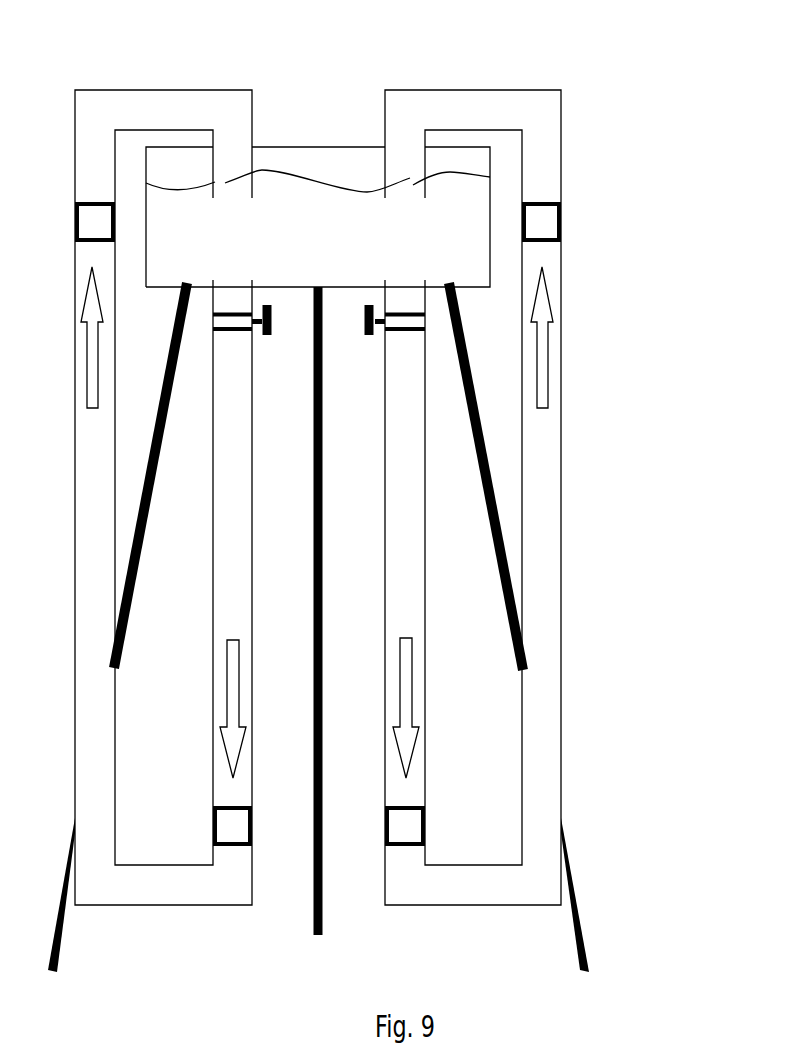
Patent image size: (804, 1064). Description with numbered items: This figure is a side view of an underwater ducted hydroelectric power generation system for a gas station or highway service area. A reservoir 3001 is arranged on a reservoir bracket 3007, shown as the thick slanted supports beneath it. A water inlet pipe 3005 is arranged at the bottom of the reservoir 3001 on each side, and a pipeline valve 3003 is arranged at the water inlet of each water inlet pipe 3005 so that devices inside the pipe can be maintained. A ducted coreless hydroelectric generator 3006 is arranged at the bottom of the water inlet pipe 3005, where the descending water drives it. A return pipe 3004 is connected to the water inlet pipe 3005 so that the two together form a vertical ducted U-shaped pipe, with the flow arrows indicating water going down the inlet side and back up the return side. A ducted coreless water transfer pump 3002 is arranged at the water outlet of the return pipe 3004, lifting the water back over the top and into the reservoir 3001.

The reservoir 3001 is at (358, 150).
The ducted coreless water transfer pump 3002 is at (538, 217).
The pipeline valve 3003 is at (402, 322).
The return pipe 3004 is at (562, 382).
The water inlet pipe 3005 is at (423, 615).
The ducted coreless hydroelectric generator 3006 is at (407, 823).
The reservoir bracket 3007 is at (578, 898).